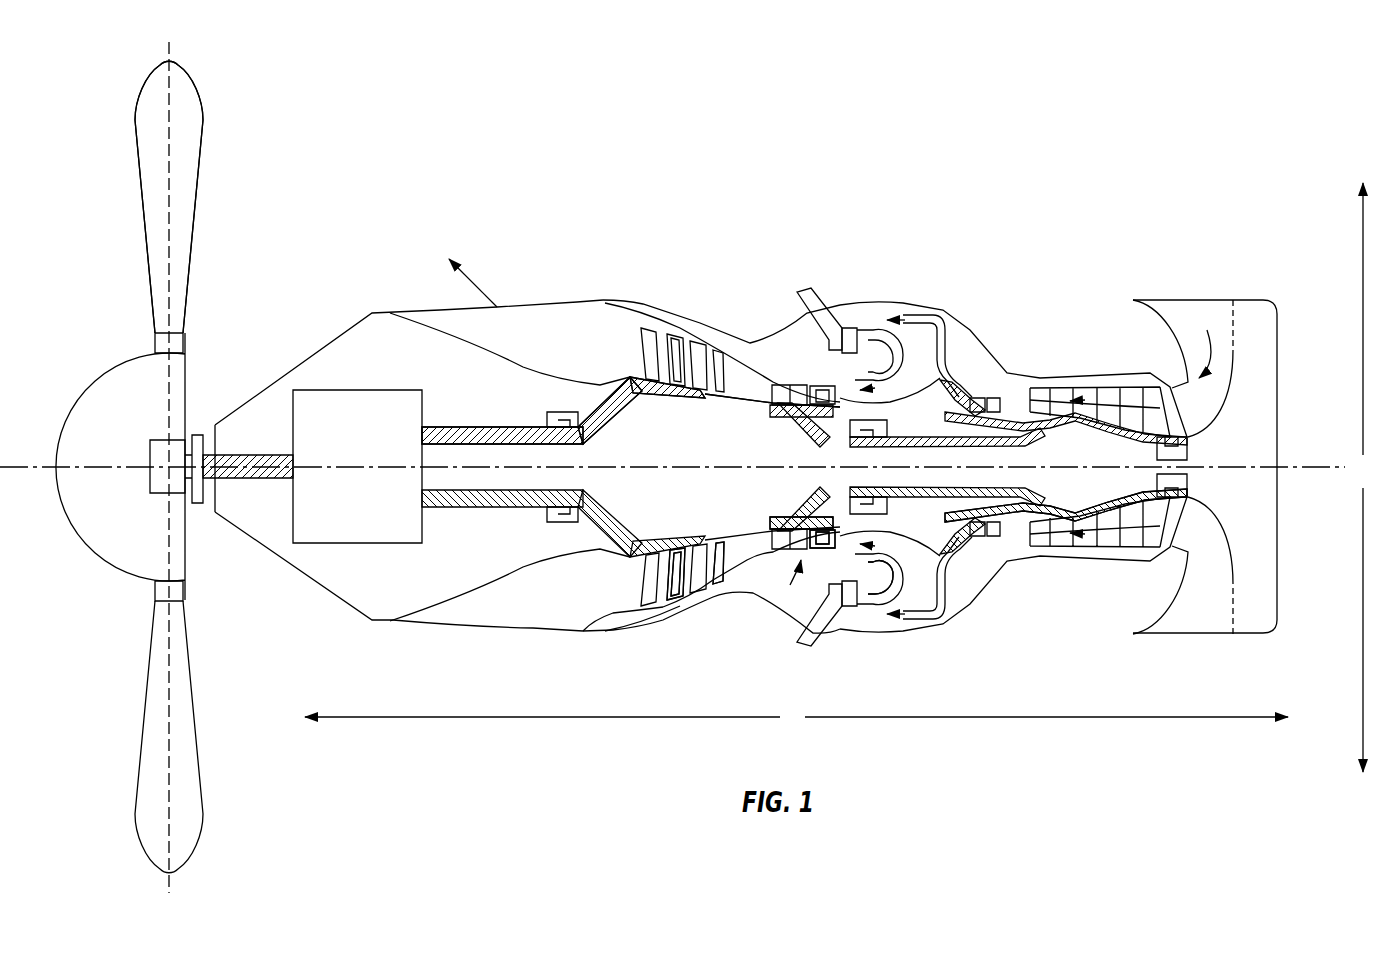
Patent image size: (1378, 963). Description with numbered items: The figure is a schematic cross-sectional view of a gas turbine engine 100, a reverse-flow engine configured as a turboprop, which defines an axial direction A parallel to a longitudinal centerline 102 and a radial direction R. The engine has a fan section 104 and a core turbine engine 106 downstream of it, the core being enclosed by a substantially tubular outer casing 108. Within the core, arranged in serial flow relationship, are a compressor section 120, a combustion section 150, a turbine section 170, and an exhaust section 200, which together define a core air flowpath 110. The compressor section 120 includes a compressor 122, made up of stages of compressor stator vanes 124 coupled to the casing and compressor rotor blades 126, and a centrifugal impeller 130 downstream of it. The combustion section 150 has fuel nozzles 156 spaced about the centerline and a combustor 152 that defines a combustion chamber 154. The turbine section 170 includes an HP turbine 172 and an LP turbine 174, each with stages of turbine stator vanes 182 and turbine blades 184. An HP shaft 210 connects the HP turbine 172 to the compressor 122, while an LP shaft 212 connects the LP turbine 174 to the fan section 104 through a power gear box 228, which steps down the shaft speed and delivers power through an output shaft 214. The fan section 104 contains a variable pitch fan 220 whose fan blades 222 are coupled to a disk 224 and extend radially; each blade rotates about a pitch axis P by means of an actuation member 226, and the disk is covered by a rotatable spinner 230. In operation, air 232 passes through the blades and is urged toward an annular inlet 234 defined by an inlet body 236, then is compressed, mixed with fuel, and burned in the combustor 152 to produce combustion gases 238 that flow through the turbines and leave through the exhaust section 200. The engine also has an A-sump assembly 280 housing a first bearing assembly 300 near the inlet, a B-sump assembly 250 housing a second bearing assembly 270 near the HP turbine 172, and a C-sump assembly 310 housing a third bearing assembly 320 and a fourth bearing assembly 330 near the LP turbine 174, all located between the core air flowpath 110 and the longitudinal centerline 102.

The gas turbine engine 100 is at (383, 270).
The longitudinal centerline 102 is at (1293, 470).
The fan section 104 is at (198, 212).
The core turbine engine 106 is at (647, 245).
The outer casing 108 is at (856, 306).
The core air flowpath 110 is at (750, 536).
The compressor section 120 is at (1009, 340).
The compressor 122 is at (1098, 572).
The compressor stator vanes 124 is at (1118, 545).
The compressor rotor blades 126 is at (1097, 540).
The centrifugal impeller 130 is at (968, 553).
The combustion section 150 is at (855, 632).
The combustor 152 is at (855, 620).
The combustion chamber 154 is at (852, 332).
The fuel nozzles 156 is at (813, 636).
The turbine section 170 is at (754, 640).
The HP turbine 172 is at (803, 598).
The LP turbine 174 is at (661, 610).
The turbine stator vanes 182 is at (656, 340).
The turbine blades 184 is at (632, 345).
The exhaust section 200 is at (551, 612).
The HP shaft 210 is at (1032, 389).
The LP shaft 212 is at (598, 380).
The output shaft 214 is at (240, 456).
The variable pitch fan 220 is at (112, 566).
The fan blades 222 is at (137, 155).
The disk 224 is at (185, 343).
The actuation member 226 is at (150, 443).
The power gear box 228 is at (374, 450).
The spinner 230 is at (84, 534).
The air 232 is at (1213, 357).
The annular inlet 234 is at (1187, 294).
The inlet body 236 is at (1242, 294).
The combustion gases 238 is at (932, 378).
The B-sump assembly 250 is at (838, 427).
The second bearing assembly 270 is at (848, 494).
The A-sump assembly 280 is at (1192, 447).
The first bearing assembly 300 is at (1189, 482).
The C-sump assembly 310 is at (541, 418).
The third bearing assembly 320 is at (568, 512).
The fourth bearing assembly 330 is at (547, 438).
The pitch axis P is at (170, 108).
The radial direction R is at (1364, 477).
The axial direction A is at (796, 717).